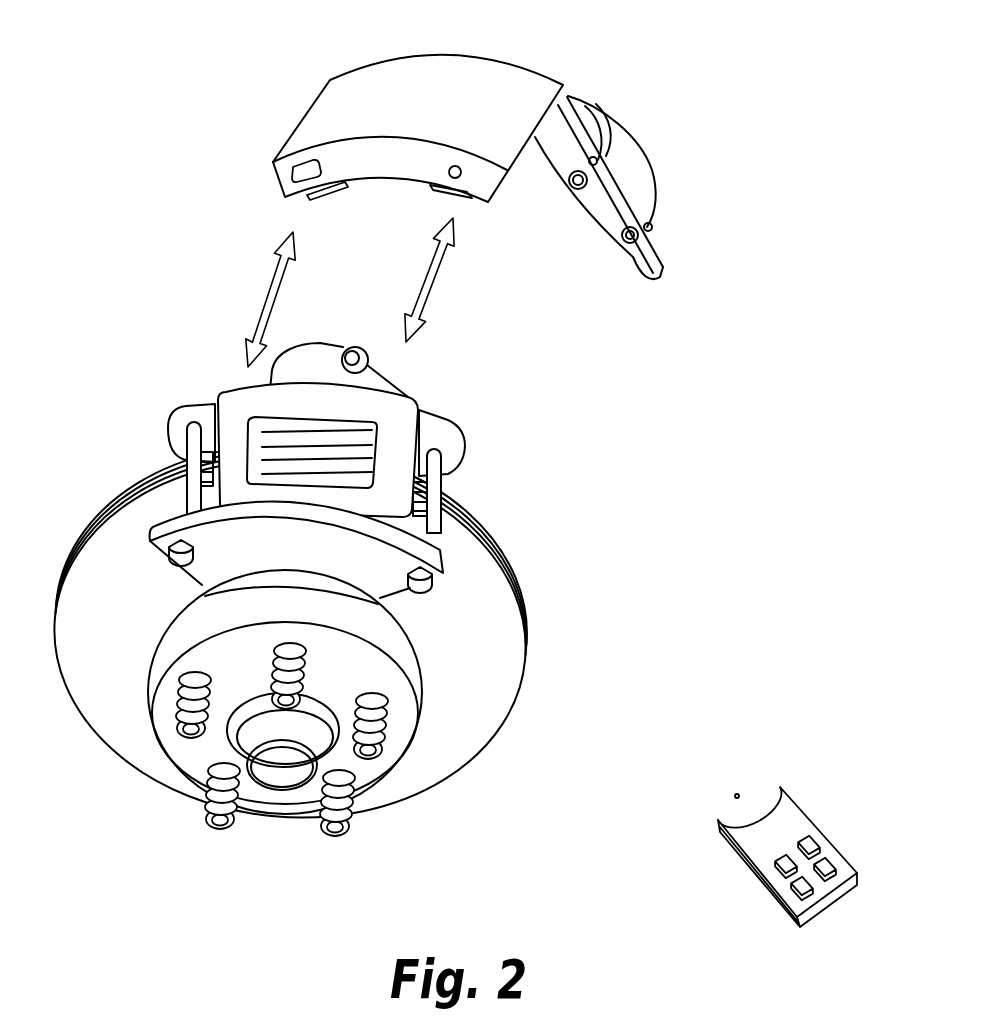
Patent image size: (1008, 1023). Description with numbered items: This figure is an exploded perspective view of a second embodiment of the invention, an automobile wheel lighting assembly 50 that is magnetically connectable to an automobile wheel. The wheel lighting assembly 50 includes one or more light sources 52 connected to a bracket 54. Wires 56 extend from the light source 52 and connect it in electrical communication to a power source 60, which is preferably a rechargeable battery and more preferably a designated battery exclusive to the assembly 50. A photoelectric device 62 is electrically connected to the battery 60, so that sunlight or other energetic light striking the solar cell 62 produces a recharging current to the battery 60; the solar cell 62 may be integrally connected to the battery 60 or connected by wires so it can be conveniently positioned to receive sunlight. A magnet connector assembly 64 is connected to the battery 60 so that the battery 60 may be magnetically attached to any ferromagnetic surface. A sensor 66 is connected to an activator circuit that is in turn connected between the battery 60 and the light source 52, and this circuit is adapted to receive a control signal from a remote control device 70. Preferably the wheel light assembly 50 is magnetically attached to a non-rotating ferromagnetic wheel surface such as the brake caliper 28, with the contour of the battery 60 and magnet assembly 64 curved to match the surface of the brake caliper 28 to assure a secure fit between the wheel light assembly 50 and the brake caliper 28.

The brake caliper 28 is at (233, 425).
The wheel lighting assembly 50 is at (228, 110).
The light source 52 is at (637, 270).
The bracket 54 is at (600, 207).
The wires 56 is at (613, 128).
The power source 60 is at (430, 110).
The photoelectric device 62 is at (291, 181).
The magnet connector assembly 64 is at (432, 186).
The sensor 66 is at (457, 178).
The remote control device 70 is at (783, 800).